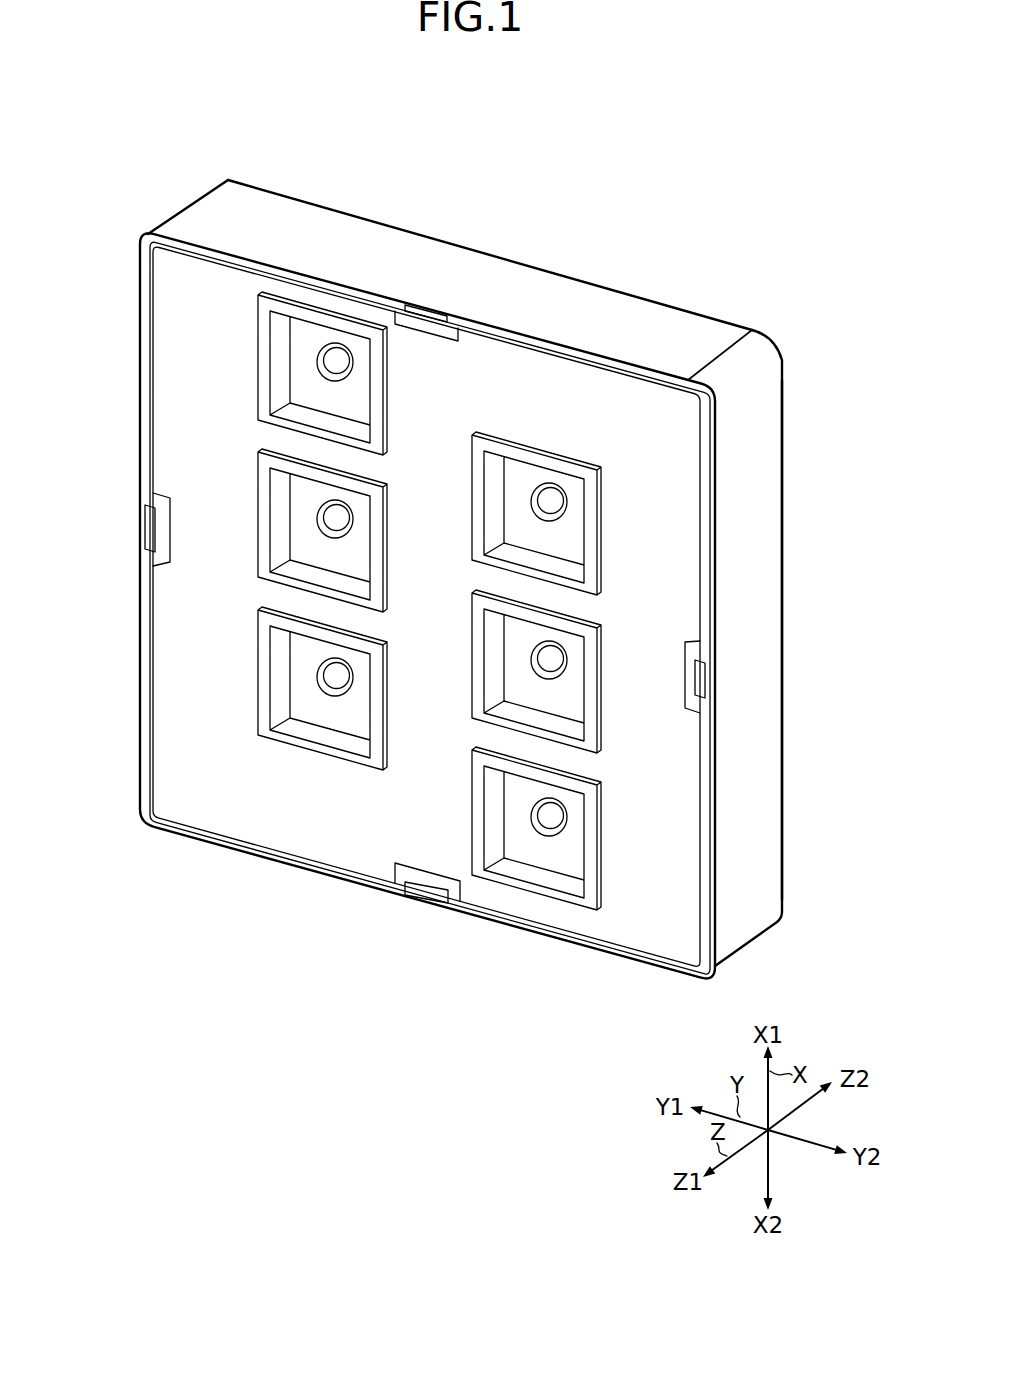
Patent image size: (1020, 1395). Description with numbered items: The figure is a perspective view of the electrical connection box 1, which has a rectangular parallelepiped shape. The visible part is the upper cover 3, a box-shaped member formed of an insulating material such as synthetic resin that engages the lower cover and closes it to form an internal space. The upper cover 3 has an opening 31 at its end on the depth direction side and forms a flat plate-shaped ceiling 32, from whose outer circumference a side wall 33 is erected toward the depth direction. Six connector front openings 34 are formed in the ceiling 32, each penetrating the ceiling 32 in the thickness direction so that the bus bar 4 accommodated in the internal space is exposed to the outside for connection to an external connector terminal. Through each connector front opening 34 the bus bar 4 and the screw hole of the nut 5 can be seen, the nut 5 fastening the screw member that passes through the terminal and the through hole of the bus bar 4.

The electrical connection box 1 is at (212, 106).
The upper cover 3 is at (677, 325).
The opening 31 is at (783, 803).
The ceiling 32 is at (655, 527).
The side wall 33 is at (763, 622).
The connector front opening 34 is at (352, 758).
The bus bar 4 is at (317, 710).
The nut 5 is at (335, 676).